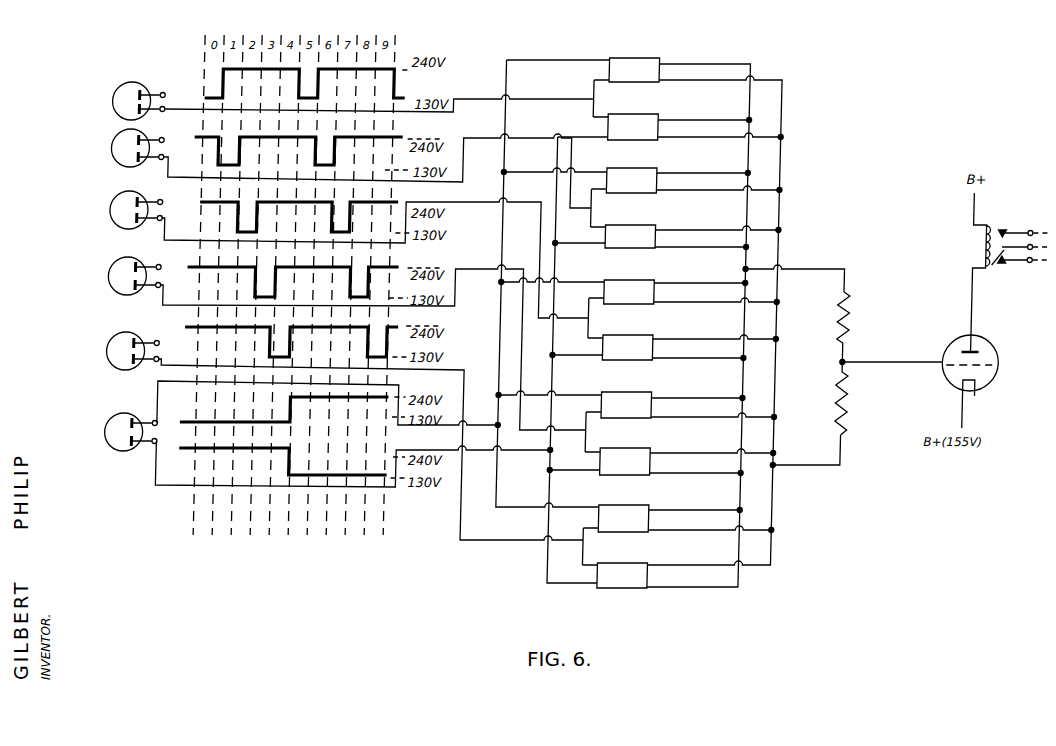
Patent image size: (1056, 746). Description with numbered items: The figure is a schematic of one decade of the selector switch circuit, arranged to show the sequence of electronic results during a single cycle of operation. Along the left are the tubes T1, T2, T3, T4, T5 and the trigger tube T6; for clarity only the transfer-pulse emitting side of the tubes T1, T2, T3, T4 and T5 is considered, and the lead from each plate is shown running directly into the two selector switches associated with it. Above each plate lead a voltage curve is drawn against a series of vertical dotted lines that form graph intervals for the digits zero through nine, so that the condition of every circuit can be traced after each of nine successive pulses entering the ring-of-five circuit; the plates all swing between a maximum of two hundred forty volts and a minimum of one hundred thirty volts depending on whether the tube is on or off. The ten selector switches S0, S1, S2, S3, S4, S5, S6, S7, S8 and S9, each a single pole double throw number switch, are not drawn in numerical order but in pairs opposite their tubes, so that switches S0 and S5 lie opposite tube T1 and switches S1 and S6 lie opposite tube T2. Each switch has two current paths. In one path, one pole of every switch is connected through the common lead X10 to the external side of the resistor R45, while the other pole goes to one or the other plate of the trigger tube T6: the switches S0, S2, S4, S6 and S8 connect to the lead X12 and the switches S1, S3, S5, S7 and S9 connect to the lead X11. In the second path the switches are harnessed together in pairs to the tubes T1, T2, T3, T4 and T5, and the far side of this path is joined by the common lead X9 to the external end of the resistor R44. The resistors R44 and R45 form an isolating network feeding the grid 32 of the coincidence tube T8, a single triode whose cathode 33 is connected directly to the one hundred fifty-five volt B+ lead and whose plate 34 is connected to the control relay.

The tube T1 is at (113, 113).
The tube T2 is at (113, 160).
The tube T3 is at (113, 222).
The tube T4 is at (113, 288).
The tube T5 is at (114, 363).
The trigger tube T6 is at (114, 444).
The coincidence tube T8 is at (951, 369).
The selector switch S0 is at (634, 70).
The selector switch S1 is at (631, 180).
The selector switch S2 is at (629, 292).
The selector switch S3 is at (626, 405).
The selector switch S4 is at (623, 518).
The selector switch S5 is at (633, 127).
The selector switch S6 is at (630, 236).
The selector switch S7 is at (627, 347).
The selector switch S8 is at (625, 461).
The selector switch S9 is at (622, 575).
The common lead X9 is at (781, 166).
The common lead X10 is at (746, 156).
The lead X11 is at (556, 585).
The lead X12 is at (525, 508).
The resistor R44 is at (850, 405).
The resistor R45 is at (852, 323).
The grid 32 is at (990, 370).
The cathode 33 is at (979, 398).
The plate 34 is at (977, 351).